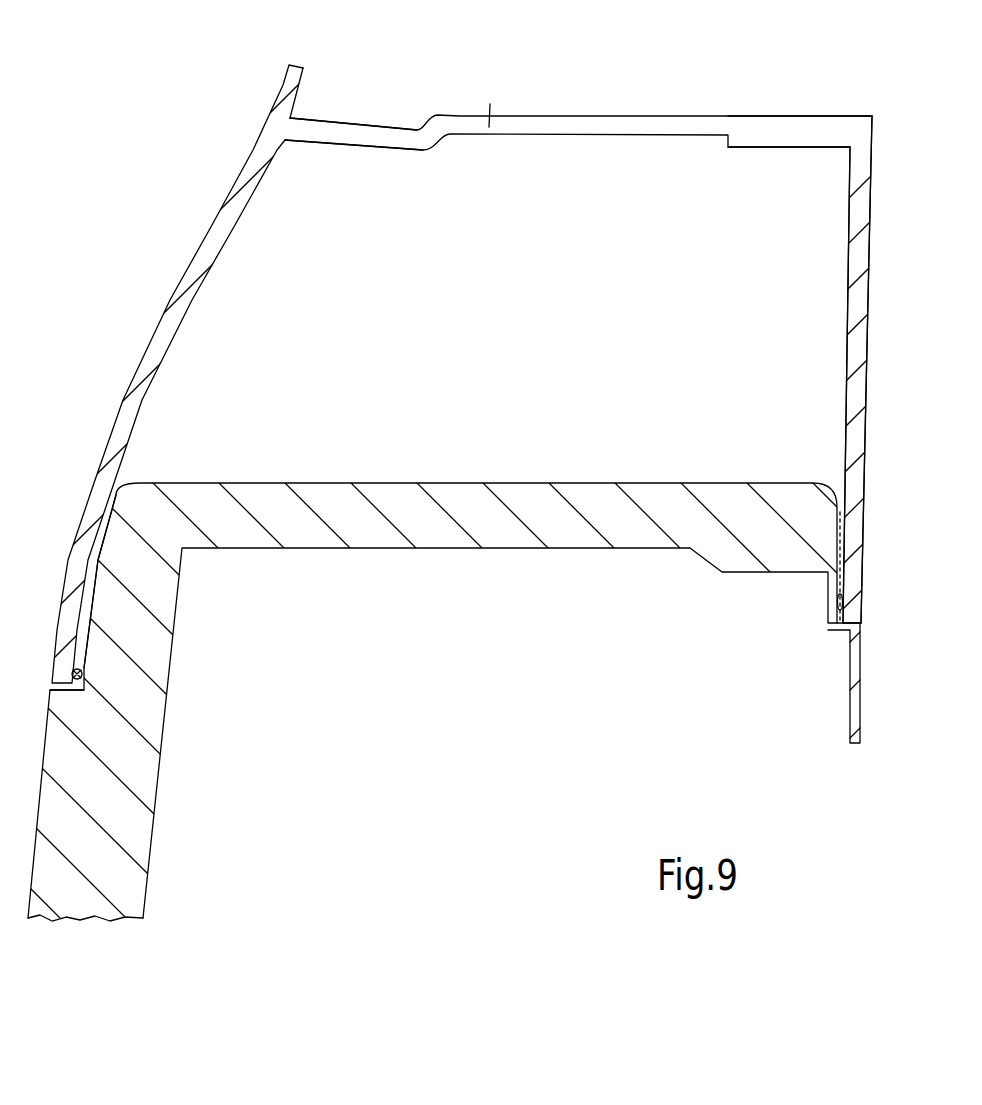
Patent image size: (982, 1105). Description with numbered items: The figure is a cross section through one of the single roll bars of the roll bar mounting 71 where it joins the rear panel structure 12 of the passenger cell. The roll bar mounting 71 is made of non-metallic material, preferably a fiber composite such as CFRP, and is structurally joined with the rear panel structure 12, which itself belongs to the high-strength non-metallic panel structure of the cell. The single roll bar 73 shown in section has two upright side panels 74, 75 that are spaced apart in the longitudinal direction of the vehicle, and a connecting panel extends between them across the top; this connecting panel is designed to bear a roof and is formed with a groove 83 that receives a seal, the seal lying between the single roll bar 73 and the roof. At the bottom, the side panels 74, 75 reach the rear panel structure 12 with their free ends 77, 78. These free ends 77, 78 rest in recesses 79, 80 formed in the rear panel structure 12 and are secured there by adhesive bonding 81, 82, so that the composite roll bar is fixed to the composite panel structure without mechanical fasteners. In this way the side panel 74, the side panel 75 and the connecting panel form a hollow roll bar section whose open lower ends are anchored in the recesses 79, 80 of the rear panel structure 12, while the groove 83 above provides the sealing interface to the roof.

The rear panel structure 12 is at (476, 559).
The roll bar mounting 71 is at (663, 108).
The single roll bar 73 is at (790, 106).
The side panel 74 is at (200, 304).
The side panel 75 is at (840, 280).
The free end 77 is at (99, 696).
The free end 78 is at (863, 588).
The recess 79 is at (78, 643).
The recess 80 is at (838, 518).
The adhesive bonding 81 is at (82, 673).
The adhesive bonding 82 is at (838, 600).
The groove 83 is at (367, 123).